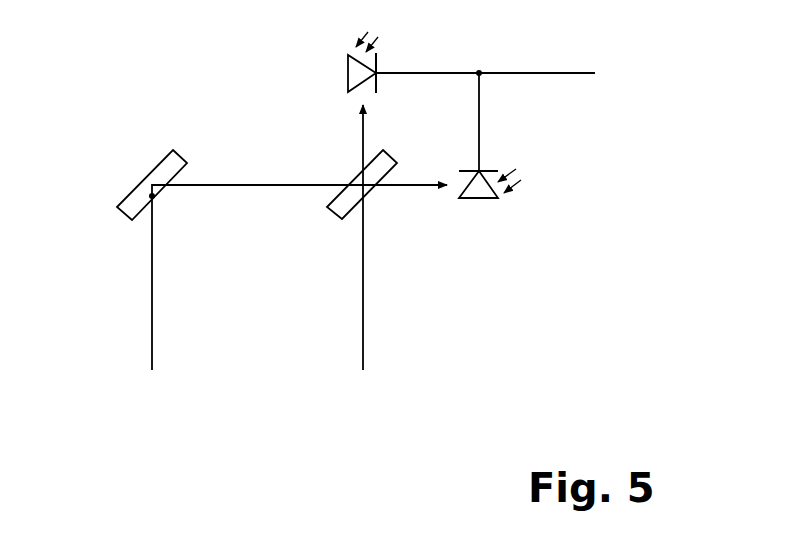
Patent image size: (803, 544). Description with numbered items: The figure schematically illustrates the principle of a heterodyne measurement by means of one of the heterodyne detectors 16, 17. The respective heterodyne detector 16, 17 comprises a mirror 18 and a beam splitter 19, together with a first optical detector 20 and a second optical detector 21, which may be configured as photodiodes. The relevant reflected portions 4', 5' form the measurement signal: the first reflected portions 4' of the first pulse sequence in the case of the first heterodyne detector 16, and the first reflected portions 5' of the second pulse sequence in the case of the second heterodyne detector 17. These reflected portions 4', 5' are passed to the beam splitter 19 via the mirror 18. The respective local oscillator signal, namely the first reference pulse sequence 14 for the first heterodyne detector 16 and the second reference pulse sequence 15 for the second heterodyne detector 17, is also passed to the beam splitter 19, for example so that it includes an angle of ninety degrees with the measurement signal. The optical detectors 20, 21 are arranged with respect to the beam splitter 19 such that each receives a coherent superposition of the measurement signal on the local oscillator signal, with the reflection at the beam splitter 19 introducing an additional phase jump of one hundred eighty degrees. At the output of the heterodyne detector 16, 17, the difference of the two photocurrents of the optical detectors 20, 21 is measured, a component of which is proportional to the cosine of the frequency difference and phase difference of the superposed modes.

The first reflected portions of the first pulse sequence 4' is at (248, 277).
The first reflected portions of the second pulse sequence 5' is at (248, 277).
The first reference pulse sequence 14 is at (425, 237).
The second reference pulse sequence 15 is at (363, 352).
The first heterodyne detector 16 is at (164, 450).
The second heterodyne detector 17 is at (196, 408).
The mirror 18 is at (153, 170).
The beam splitter 19 is at (333, 212).
The first optical detector 20 is at (348, 72).
The second optical detector 21 is at (482, 200).